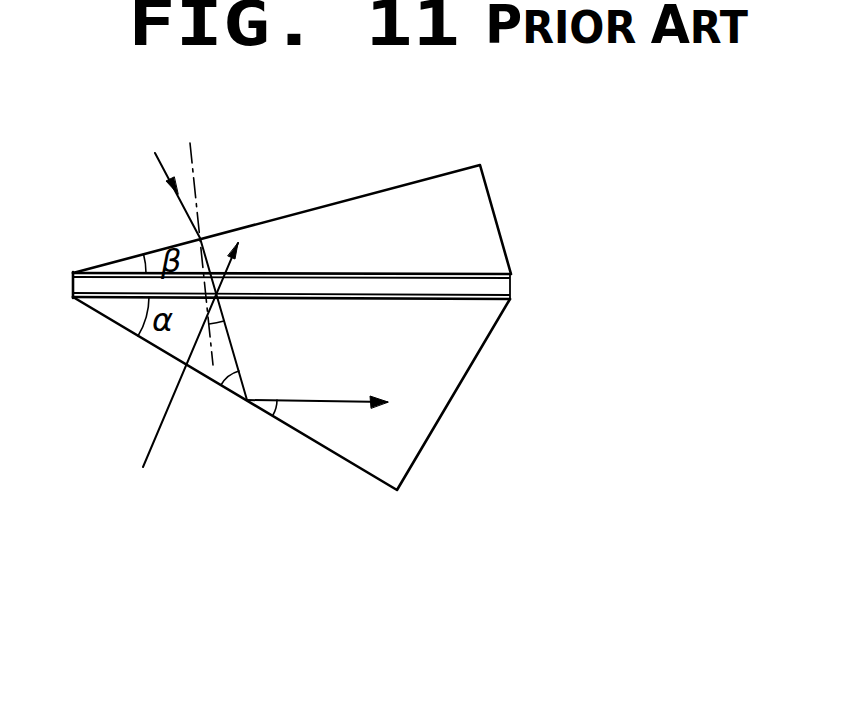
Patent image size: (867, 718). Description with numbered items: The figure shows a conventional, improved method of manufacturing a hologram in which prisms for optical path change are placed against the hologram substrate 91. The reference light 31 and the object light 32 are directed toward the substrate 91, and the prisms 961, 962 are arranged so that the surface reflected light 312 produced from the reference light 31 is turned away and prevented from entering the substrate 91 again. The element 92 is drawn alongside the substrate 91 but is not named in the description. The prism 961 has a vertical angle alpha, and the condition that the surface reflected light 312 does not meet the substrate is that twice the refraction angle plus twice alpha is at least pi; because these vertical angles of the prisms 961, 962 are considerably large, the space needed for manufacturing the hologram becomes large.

The reference light 31 is at (157, 164).
The object light 32 is at (160, 418).
The surface reflected light 312 is at (337, 403).
The substrate 91 is at (502, 288).
The cladding layer 92 is at (460, 274).
The prism 961 is at (430, 383).
The prism 962 is at (468, 199).